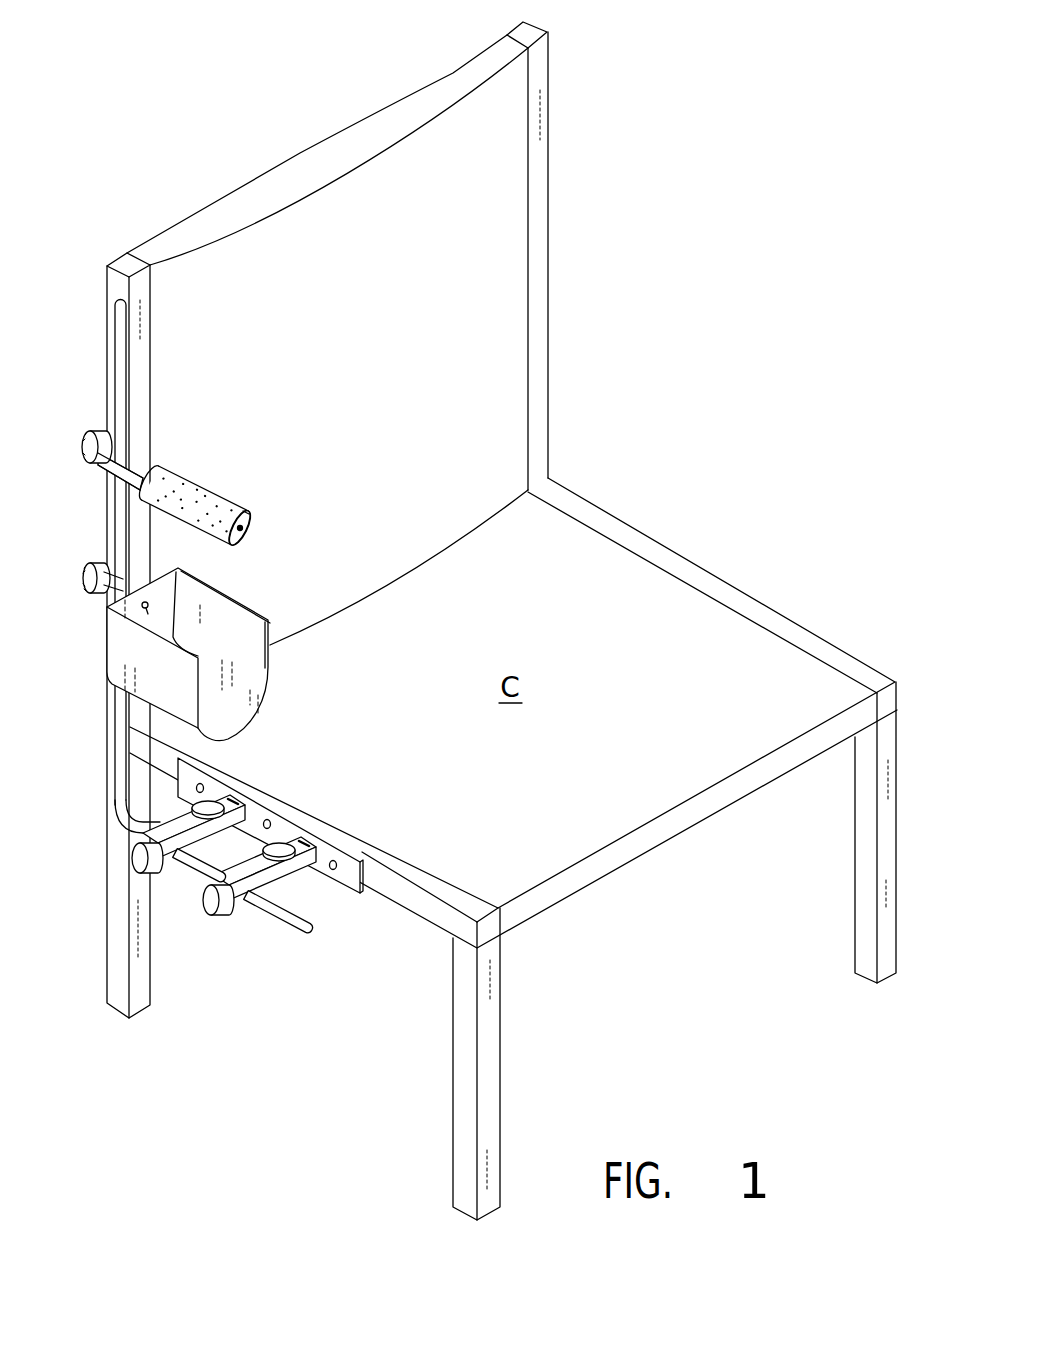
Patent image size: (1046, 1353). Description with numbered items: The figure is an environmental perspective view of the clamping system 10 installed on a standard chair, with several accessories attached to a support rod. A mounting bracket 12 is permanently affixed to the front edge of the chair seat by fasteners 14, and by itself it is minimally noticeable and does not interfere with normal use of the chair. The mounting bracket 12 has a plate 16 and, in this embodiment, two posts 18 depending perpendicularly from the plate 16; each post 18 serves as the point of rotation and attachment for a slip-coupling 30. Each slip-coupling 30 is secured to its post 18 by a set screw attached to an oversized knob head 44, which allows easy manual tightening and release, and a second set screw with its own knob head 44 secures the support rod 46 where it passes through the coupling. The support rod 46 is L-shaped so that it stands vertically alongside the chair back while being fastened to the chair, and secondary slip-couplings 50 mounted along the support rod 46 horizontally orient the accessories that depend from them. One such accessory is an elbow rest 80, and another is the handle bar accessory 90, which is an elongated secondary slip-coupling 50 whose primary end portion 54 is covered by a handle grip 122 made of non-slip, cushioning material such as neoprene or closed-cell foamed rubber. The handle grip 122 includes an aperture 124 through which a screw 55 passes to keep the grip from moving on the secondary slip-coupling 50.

The clamping system 10 is at (312, 427).
The mounting bracket 12 is at (366, 872).
The fasteners 14 is at (272, 822).
The plate 16 is at (332, 888).
The post 18 is at (200, 843).
The slip-coupling 30 is at (168, 870).
The knob head 44 is at (212, 808).
The support rod 46 is at (116, 766).
The secondary slip-coupling 50 is at (100, 470).
The primary end portion 54 is at (157, 460).
The screw 55 is at (321, 518).
The elbow rest 80 is at (253, 603).
The handle bar accessory 90 is at (210, 483).
The handle grip 122 is at (238, 507).
The aperture 124 is at (240, 530).